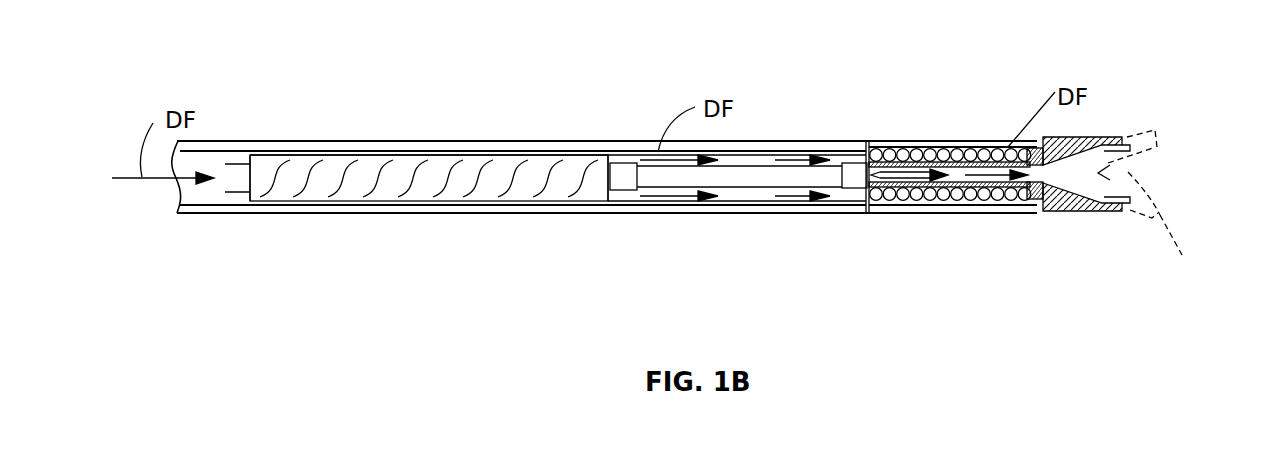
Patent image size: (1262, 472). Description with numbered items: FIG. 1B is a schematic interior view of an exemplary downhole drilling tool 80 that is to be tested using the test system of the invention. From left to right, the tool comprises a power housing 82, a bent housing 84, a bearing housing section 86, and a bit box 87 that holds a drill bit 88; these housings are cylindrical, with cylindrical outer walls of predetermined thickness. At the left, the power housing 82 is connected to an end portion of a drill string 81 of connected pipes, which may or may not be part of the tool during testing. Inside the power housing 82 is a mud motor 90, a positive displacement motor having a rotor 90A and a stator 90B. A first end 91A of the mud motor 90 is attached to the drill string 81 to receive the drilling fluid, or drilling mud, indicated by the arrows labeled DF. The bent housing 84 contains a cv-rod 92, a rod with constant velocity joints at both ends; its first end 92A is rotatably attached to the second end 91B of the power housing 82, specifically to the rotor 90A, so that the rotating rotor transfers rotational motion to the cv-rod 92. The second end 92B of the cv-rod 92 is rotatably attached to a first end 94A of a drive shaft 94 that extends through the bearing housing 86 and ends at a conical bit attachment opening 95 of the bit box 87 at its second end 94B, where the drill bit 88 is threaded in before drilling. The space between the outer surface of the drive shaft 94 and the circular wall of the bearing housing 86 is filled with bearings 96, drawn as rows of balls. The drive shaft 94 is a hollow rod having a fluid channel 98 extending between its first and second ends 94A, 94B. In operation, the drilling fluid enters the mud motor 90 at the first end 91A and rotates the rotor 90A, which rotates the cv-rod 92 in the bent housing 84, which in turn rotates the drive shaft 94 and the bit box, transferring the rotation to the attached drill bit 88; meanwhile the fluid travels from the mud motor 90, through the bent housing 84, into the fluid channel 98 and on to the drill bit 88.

The downhole drilling tool 80 is at (819, 68).
The drill string 81 is at (225, 230).
The power housing 82 is at (420, 215).
The bent housing 84 is at (695, 215).
The bearing housing section 86 is at (972, 214).
The bit box 87 is at (1062, 212).
The drill bit 88 is at (1181, 253).
The mud motor 90 is at (413, 173).
The rotor 90A is at (323, 180).
The stator 90B is at (505, 152).
The first end of the mud motor 91A is at (263, 181).
The second end of the power housing 91B is at (589, 193).
The cv-rod 92 is at (742, 152).
The first end of the cv-rod 92A is at (627, 176).
The second end of the cv-rod 92B is at (855, 186).
The drive shaft 94 is at (947, 193).
The first end of the drive shaft 94A is at (884, 150).
The second end of the drive shaft 94B is at (1105, 143).
The conical bit attachment opening 95 is at (1147, 152).
The bearings 96 is at (920, 150).
The fluid channel 98 is at (893, 198).